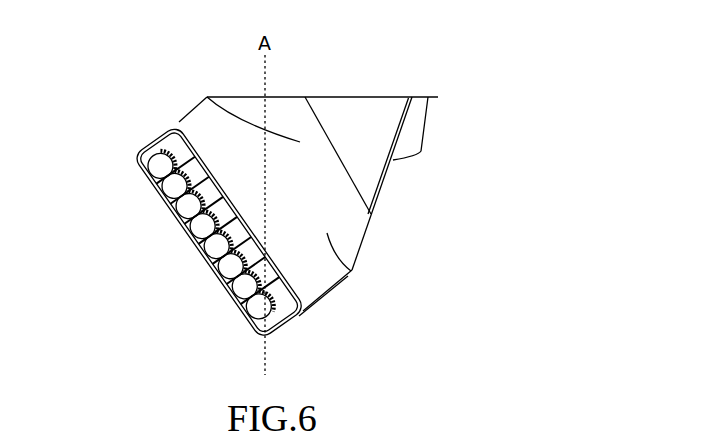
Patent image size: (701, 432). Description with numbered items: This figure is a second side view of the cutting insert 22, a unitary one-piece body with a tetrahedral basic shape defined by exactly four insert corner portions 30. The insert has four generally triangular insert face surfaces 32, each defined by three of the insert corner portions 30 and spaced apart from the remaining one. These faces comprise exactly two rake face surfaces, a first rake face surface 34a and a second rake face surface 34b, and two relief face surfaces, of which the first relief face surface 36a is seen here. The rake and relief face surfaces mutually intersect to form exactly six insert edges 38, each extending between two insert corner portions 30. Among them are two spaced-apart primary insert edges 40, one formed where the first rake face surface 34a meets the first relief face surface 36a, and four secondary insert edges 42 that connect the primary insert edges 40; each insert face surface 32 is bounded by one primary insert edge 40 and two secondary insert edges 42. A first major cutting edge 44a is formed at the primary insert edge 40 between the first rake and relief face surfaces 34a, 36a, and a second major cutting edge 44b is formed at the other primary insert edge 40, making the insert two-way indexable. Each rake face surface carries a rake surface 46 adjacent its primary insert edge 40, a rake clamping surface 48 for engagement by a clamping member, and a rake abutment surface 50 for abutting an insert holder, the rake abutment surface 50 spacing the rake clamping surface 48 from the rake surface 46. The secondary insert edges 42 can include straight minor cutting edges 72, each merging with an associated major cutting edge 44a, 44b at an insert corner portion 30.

The cutting insert 22 is at (515, 83).
The insert corner portions 30 is at (127, 153).
The insert face surfaces 32 is at (313, 163).
The first rake face surface 34a is at (243, 97).
The second rake face surface 34b is at (360, 277).
The first relief face surface 36a is at (383, 185).
The insert edges 38 is at (315, 225).
The primary insert edges 40 is at (315, 225).
The secondary insert edges 42 is at (339, 97).
The first major cutting edge 44a is at (438, 97).
The second major cutting edge 44b is at (160, 200).
The rake surface 46 is at (210, 240).
The rake clamping surface 48 is at (207, 97).
The rake abutment surface 50 is at (200, 138).
The minor cutting edges 72 is at (158, 135).